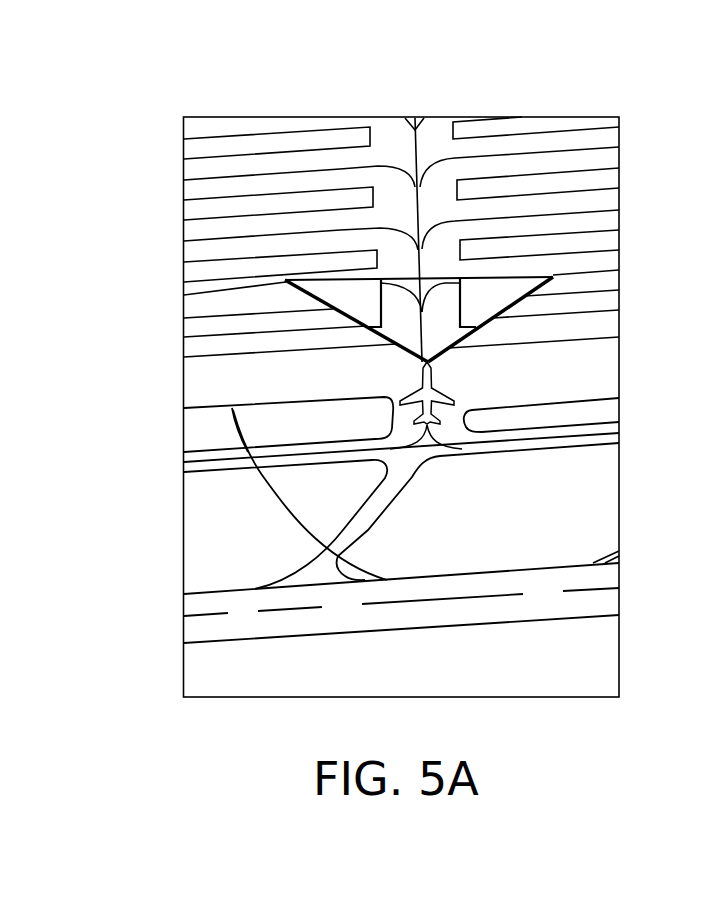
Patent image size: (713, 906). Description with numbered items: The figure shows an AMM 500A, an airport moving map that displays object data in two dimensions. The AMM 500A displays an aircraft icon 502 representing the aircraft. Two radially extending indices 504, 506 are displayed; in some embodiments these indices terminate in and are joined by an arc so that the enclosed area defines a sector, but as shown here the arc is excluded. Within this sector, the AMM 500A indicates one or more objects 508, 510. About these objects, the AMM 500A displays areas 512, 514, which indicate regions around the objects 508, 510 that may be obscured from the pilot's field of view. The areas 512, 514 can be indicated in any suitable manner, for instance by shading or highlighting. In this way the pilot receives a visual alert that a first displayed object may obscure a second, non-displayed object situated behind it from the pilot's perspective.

The AMM 500A is at (180, 66).
The aircraft icon 502 is at (413, 381).
The radially extending index 504 is at (313, 297).
The radially extending index 506 is at (521, 303).
The object 508 is at (366, 326).
The object 510 is at (475, 326).
The area 512 is at (363, 277).
The area 514 is at (519, 280).